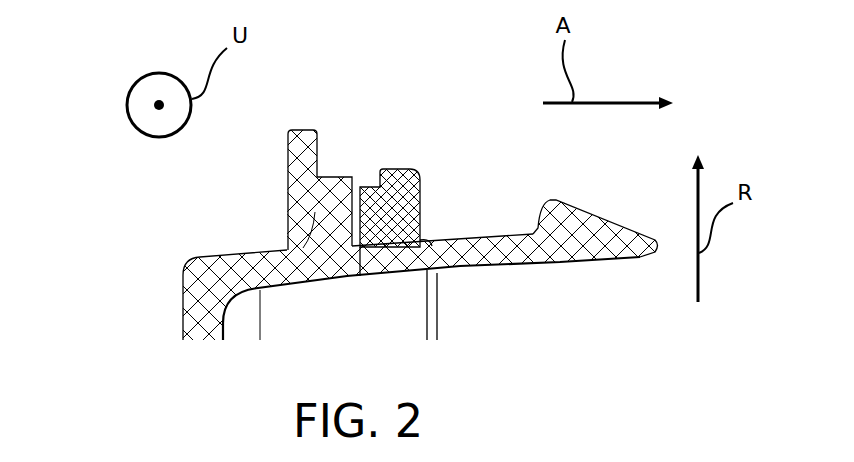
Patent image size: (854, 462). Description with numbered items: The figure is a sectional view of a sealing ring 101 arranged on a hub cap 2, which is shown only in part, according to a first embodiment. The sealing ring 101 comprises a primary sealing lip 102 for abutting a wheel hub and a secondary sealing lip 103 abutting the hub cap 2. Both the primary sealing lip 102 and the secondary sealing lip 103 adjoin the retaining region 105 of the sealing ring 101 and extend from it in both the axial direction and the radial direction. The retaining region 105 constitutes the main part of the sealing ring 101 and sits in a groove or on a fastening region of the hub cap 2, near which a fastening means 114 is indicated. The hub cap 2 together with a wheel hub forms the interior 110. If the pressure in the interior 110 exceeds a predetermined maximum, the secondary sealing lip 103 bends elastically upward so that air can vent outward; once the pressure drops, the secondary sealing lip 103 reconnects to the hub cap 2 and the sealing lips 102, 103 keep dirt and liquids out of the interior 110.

The hub cap 2 is at (190, 265).
The sealing ring 101 is at (430, 173).
The primary sealing lip 102 is at (388, 170).
The secondary sealing lip 103 is at (362, 186).
The retaining region 105 is at (422, 222).
The interior 110 is at (565, 320).
The fastening means 114 is at (578, 207).